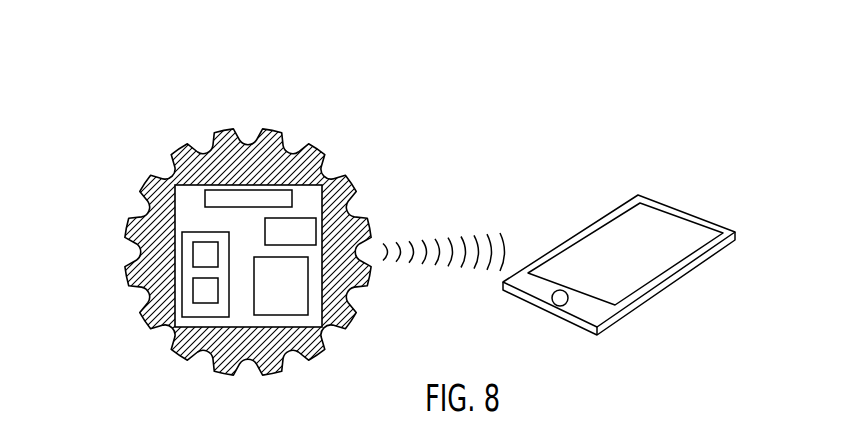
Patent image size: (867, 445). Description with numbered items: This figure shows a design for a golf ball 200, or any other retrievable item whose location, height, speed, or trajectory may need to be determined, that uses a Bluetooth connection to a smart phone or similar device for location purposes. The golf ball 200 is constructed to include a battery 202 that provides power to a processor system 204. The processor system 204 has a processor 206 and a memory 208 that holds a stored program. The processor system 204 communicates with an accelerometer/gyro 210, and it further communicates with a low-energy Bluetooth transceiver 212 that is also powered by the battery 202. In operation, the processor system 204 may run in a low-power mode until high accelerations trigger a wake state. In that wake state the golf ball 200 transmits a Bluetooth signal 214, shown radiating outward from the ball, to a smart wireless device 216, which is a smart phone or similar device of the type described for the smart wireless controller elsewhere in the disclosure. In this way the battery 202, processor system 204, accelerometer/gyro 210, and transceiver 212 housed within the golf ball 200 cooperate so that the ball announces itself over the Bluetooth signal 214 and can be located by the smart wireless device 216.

The golf ball 200 is at (287, 143).
The battery 202 is at (285, 190).
The processor system 204 is at (186, 269).
The processor 206 is at (190, 244).
The memory 208 is at (193, 292).
The accelerometer/gyro 210 is at (318, 229).
The low-energy Bluetooth transceiver 212 is at (308, 289).
The Bluetooth signal 214 is at (450, 255).
The smart wireless device 216 is at (653, 292).